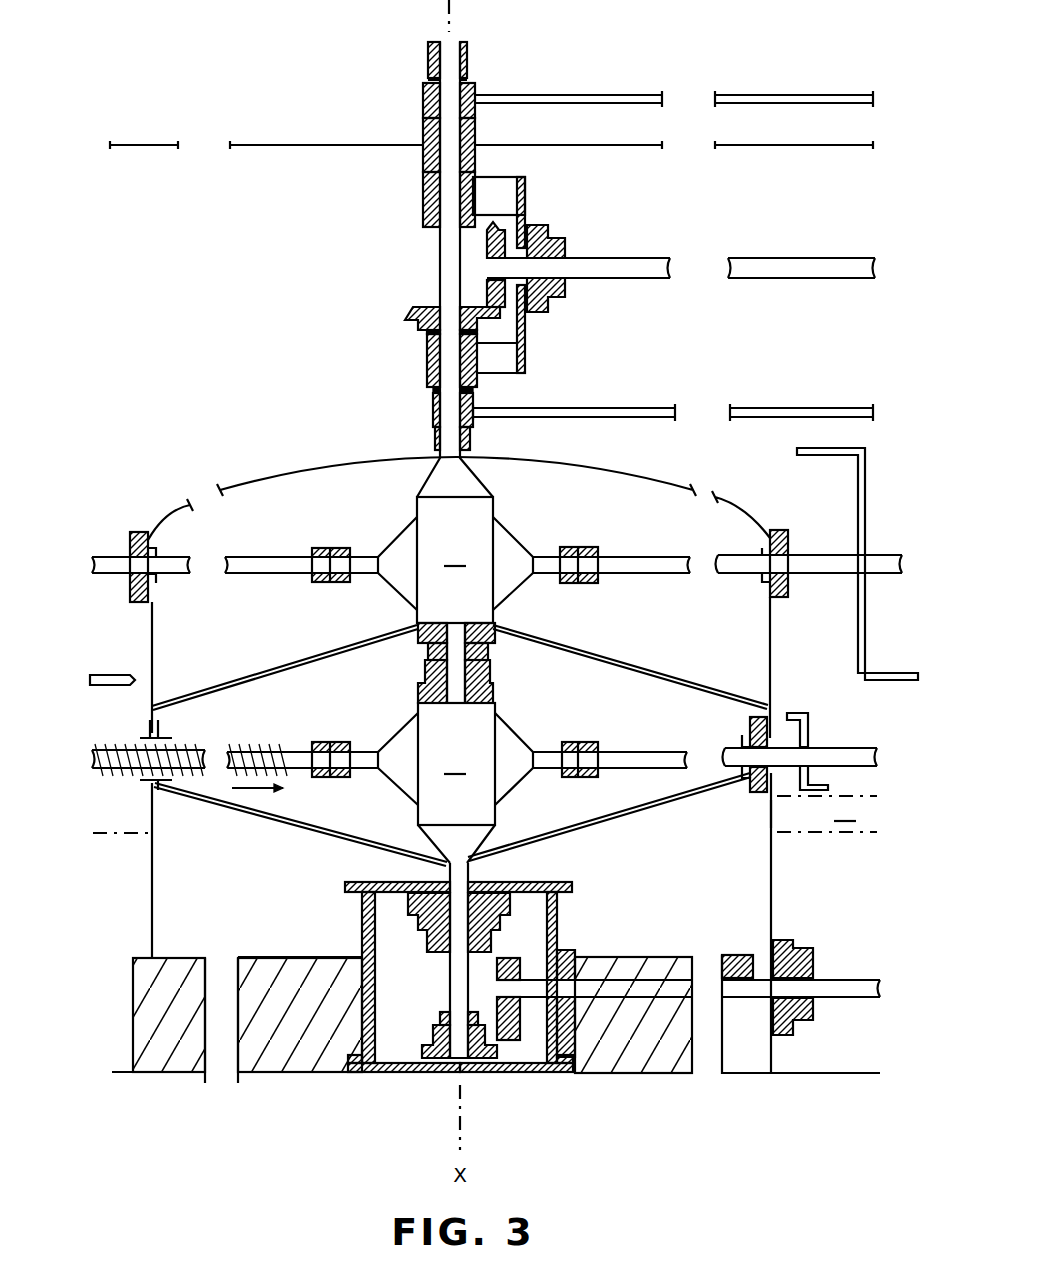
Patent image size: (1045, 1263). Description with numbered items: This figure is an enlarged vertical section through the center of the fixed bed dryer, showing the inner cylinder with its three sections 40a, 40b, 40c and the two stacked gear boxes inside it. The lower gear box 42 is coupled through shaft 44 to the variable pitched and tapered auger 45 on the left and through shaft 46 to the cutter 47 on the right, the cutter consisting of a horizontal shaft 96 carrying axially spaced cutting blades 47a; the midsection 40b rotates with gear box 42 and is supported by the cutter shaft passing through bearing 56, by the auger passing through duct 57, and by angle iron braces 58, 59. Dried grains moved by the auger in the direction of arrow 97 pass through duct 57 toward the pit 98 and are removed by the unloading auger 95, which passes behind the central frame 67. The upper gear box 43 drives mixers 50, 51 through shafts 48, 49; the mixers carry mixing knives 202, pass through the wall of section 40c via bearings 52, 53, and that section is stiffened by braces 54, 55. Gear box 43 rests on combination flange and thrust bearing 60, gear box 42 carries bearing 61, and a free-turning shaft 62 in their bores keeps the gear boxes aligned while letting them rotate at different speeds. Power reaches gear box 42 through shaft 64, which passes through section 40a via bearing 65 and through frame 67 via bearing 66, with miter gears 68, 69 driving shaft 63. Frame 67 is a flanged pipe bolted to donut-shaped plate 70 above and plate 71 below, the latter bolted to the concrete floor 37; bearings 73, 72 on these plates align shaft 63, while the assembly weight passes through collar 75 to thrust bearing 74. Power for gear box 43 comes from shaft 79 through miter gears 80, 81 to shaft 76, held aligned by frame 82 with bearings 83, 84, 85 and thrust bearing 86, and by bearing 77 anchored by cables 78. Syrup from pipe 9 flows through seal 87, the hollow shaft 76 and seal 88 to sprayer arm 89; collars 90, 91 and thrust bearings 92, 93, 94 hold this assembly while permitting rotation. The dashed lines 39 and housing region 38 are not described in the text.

The pipe 9 is at (715, 95).
The concrete floor 37 is at (140, 1072).
The housing portion 38 is at (814, 812).
The parting plane 39 is at (130, 834).
The cylindrical section 40a is at (153, 912).
The cylindrical section 40b is at (153, 790).
The cylindrical section 40c is at (615, 479).
The lower gear box 42 is at (455, 783).
The upper gear box 43 is at (455, 560).
The shaft 44 is at (370, 750).
The variable pitched and tapered auger 45 is at (102, 748).
The shaft 46 is at (548, 750).
The cutter 47 is at (842, 750).
The cutting knives or blades 47a is at (803, 713).
The shaft 48 is at (366, 575).
The shaft 49 is at (545, 576).
The mixer 50 is at (730, 575).
The mixer 51 is at (110, 575).
The bearing 52 is at (140, 603).
The bearing 53 is at (788, 598).
The angle iron brace 54 is at (305, 660).
The angle iron brace 55 is at (640, 656).
The bearing 56 is at (748, 722).
The duct 57 is at (168, 738).
The angle iron brace 58 is at (358, 836).
The angle iron brace 59 is at (605, 828).
The combination flange and thrust bearing 60 is at (492, 641).
The combination flange and thrust bearing 61 is at (492, 686).
The shaft 62 is at (430, 655).
The shaft 63 is at (469, 885).
The shaft 64 is at (850, 979).
The bearing 65 is at (815, 952).
The bearing 66 is at (600, 978).
The inner frame member 67 is at (560, 955).
The miter gear 68 is at (505, 950).
The miter gear 69 is at (422, 936).
The donut-shaped steel plate 70 is at (540, 882).
The steel plate 71 is at (512, 1072).
The bearing 72 is at (440, 1072).
The combination flange and thrust bearing 73 is at (420, 882).
The thrust bearing 74 is at (440, 1015).
The collar 75 is at (440, 1012).
The shaft 76 is at (526, 358).
The bearing 77 is at (476, 136).
The cables 78 is at (230, 145).
The shaft 79 is at (728, 262).
The miter gear 80 is at (487, 232).
The miter gear 81 is at (412, 307).
The frame 82 is at (526, 192).
The bearing 83 is at (423, 192).
The bearing 84 is at (427, 356).
The bearing 85 is at (566, 240).
The thrust bearing 86 is at (427, 332).
The seal 87 is at (423, 98).
The seal 88 is at (475, 405).
The sprayer arm 89 is at (730, 408).
The collar 90 is at (471, 447).
The collar 91 is at (468, 60).
The thrust bearing 92 is at (433, 425).
The thrust bearing 93 is at (433, 391).
The thrust bearing 94 is at (428, 80).
The unloading auger 95 is at (300, 1045).
The shaft 96 is at (878, 752).
The arrow 97 is at (255, 790).
The pit 98 is at (290, 957).
The mixing knives 202 is at (866, 510).